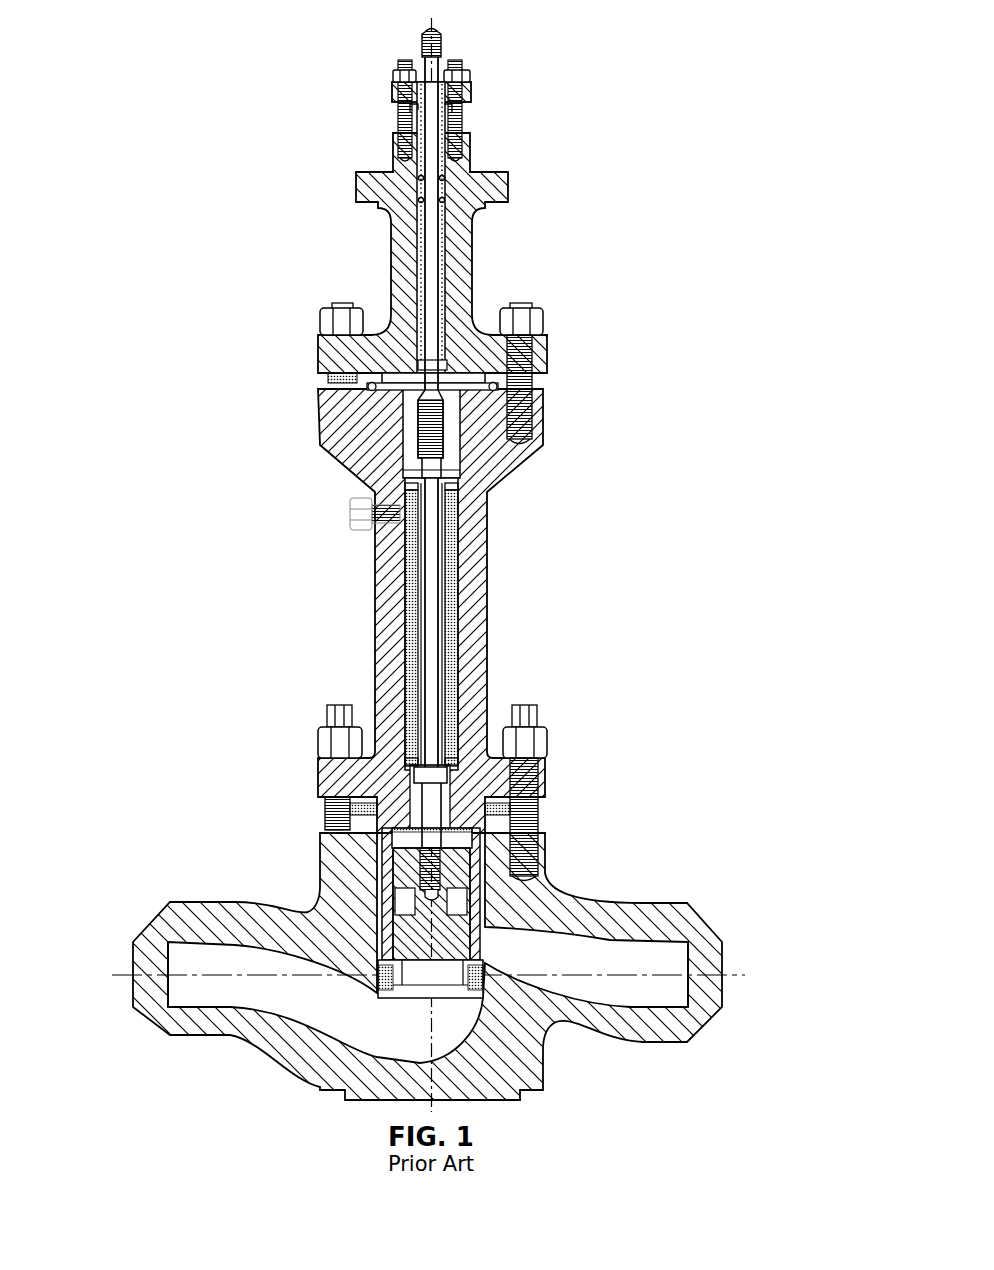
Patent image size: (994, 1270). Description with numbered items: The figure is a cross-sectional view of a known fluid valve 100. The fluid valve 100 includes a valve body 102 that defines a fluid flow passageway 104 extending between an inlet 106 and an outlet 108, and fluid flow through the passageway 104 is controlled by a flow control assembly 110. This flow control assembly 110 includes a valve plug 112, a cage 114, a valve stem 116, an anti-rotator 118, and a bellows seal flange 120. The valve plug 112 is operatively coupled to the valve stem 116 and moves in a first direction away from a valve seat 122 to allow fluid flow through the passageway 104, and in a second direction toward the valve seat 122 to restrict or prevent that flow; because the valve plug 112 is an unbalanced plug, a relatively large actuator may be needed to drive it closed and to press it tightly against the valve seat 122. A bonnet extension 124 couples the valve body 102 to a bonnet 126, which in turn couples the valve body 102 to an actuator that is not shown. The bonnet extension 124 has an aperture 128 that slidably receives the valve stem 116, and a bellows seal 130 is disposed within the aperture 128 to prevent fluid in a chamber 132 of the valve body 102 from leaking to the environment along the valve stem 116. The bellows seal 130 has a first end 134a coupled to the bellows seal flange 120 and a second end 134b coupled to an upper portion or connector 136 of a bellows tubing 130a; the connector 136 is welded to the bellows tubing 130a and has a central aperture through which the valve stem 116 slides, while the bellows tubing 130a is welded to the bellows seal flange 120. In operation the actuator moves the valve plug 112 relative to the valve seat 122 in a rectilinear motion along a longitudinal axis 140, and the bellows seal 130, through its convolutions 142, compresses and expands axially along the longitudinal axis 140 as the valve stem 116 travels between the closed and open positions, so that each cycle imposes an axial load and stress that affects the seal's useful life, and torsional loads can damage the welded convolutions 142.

The fluid valve 100 is at (650, 58).
The valve body 102 is at (298, 1067).
The fluid flow passageway 104 is at (360, 1034).
The inlet 106 is at (133, 991).
The outlet 108 is at (722, 992).
The flow control assembly 110 is at (374, 874).
The valve plug 112 is at (455, 932).
The cage 114 is at (387, 922).
The valve stem 116 is at (443, 637).
The anti-rotator 118 is at (523, 850).
The bellows seal flange 120 is at (520, 784).
The valve seat 122 is at (478, 968).
The bonnet extension 124 is at (487, 537).
The bonnet 126 is at (473, 265).
The aperture 128 is at (460, 594).
The bellows seal 130 is at (443, 690).
The bellows tubing 130a is at (405, 568).
The chamber 132 is at (378, 832).
The first end 134a is at (455, 760).
The second end 134b is at (447, 488).
The connector 136 is at (407, 483).
The longitudinal axis 140 is at (428, 593).
The convolutions 142 is at (417, 488).